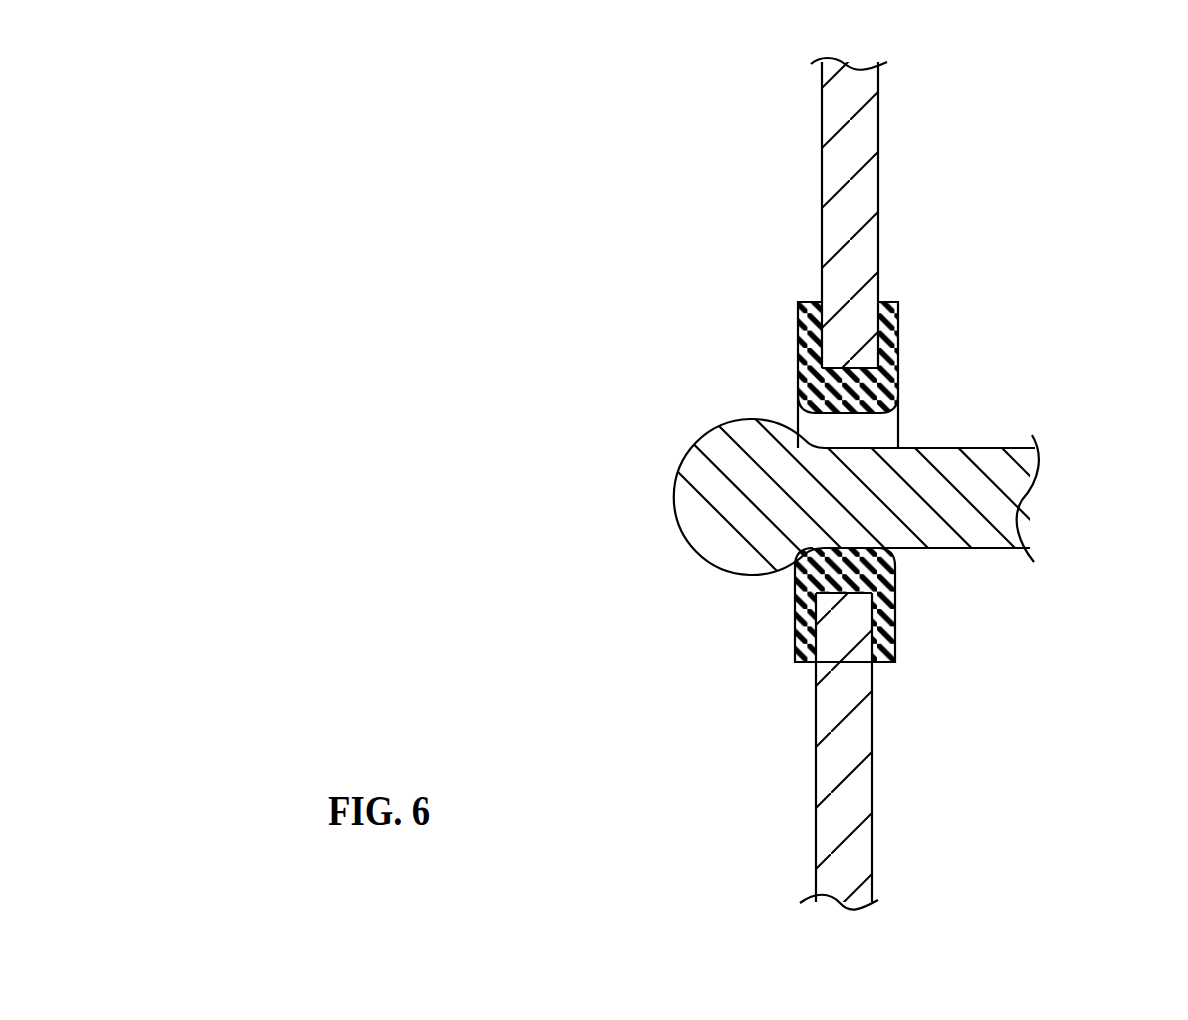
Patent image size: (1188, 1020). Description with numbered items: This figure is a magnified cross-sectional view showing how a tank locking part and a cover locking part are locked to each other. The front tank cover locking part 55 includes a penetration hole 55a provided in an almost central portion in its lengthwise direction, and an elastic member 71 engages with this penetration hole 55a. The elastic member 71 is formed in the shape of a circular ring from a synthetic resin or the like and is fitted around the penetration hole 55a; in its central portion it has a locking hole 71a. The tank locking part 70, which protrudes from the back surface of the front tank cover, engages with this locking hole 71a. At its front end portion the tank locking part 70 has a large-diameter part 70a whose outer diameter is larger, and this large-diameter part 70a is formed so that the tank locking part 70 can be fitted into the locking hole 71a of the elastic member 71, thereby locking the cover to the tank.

The front tank cover locking part 55 is at (863, 135).
The penetration hole 55a is at (855, 572).
The tank locking part 70 is at (993, 498).
The large-diameter part 70a is at (688, 488).
The elastic member 71 is at (890, 325).
The locking hole 71a is at (905, 422).